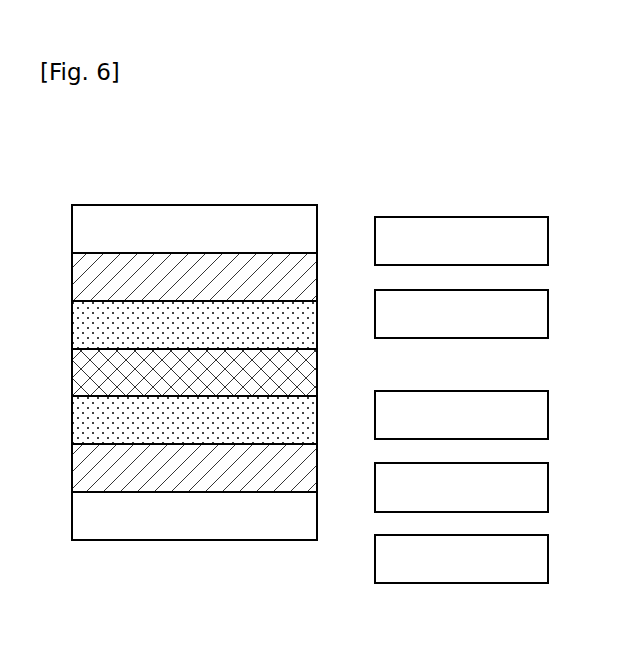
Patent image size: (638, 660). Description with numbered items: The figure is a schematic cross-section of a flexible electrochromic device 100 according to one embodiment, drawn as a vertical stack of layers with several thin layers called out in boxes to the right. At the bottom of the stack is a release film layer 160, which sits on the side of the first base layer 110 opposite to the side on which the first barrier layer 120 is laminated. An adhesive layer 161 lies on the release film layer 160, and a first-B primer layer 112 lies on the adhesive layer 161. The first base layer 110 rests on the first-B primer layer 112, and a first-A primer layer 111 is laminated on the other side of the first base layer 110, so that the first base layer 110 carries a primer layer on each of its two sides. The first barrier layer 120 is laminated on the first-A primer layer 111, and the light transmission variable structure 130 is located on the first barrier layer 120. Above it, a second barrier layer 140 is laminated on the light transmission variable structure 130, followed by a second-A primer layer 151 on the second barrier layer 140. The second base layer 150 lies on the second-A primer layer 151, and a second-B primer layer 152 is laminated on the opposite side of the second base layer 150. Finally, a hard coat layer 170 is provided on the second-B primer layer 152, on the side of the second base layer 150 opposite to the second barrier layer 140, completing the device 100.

The flexible electrochromic device 100 is at (297, 144).
The hard coat layer 170 is at (194, 229).
The second base layer 150 is at (194, 277).
The second barrier layer 140 is at (194, 325).
The light transmission variable structure 130 is at (194, 372).
The first barrier layer 120 is at (194, 420).
The first base layer 110 is at (194, 468).
The release film layer 160 is at (194, 516).
The second-B primer layer 152 is at (318, 253).
The second-A primer layer 151 is at (318, 301).
The first-A primer layer 111 is at (318, 444).
The first-B primer layer 112 is at (318, 492).
The adhesive layer 161 is at (318, 492).